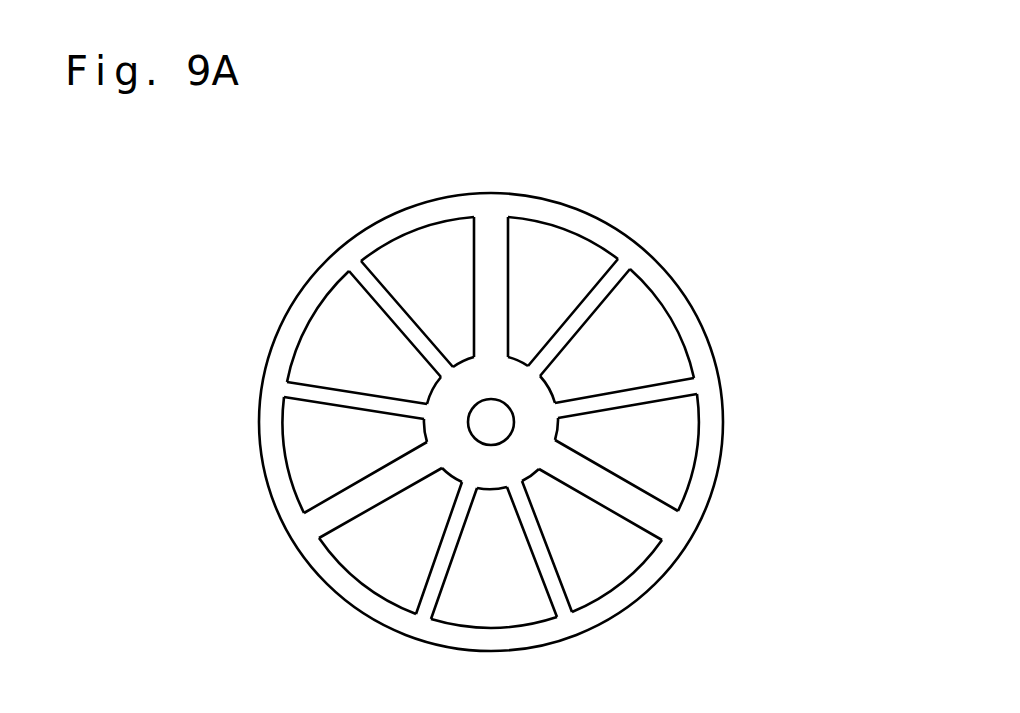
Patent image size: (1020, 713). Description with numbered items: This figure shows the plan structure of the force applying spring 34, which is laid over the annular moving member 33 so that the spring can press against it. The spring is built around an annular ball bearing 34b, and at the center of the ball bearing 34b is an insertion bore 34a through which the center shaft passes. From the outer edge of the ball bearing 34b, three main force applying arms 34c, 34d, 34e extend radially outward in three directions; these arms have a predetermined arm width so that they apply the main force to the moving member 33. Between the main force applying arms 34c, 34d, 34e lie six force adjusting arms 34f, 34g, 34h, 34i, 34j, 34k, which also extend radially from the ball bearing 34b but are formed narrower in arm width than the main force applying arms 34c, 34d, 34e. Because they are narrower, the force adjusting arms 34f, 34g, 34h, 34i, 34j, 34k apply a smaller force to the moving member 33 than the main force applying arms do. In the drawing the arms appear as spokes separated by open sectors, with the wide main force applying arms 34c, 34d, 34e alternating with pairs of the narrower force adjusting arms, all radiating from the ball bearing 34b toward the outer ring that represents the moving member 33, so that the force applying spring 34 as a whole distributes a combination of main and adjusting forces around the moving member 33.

The moving member 33 is at (706, 462).
The force applying spring 34 is at (519, 360).
The insertion bore 34a is at (504, 429).
The annular ball bearing 34b is at (513, 372).
The main force applying arm 34c is at (482, 252).
The main force applying arm 34d is at (345, 515).
The main force applying arm 34e is at (633, 503).
The force adjusting arm 34f is at (370, 287).
The force adjusting arm 34g is at (316, 393).
The force adjusting arm 34h is at (438, 566).
The force adjusting arm 34i is at (553, 580).
The force adjusting arm 34j is at (662, 390).
The force adjusting arm 34k is at (612, 284).